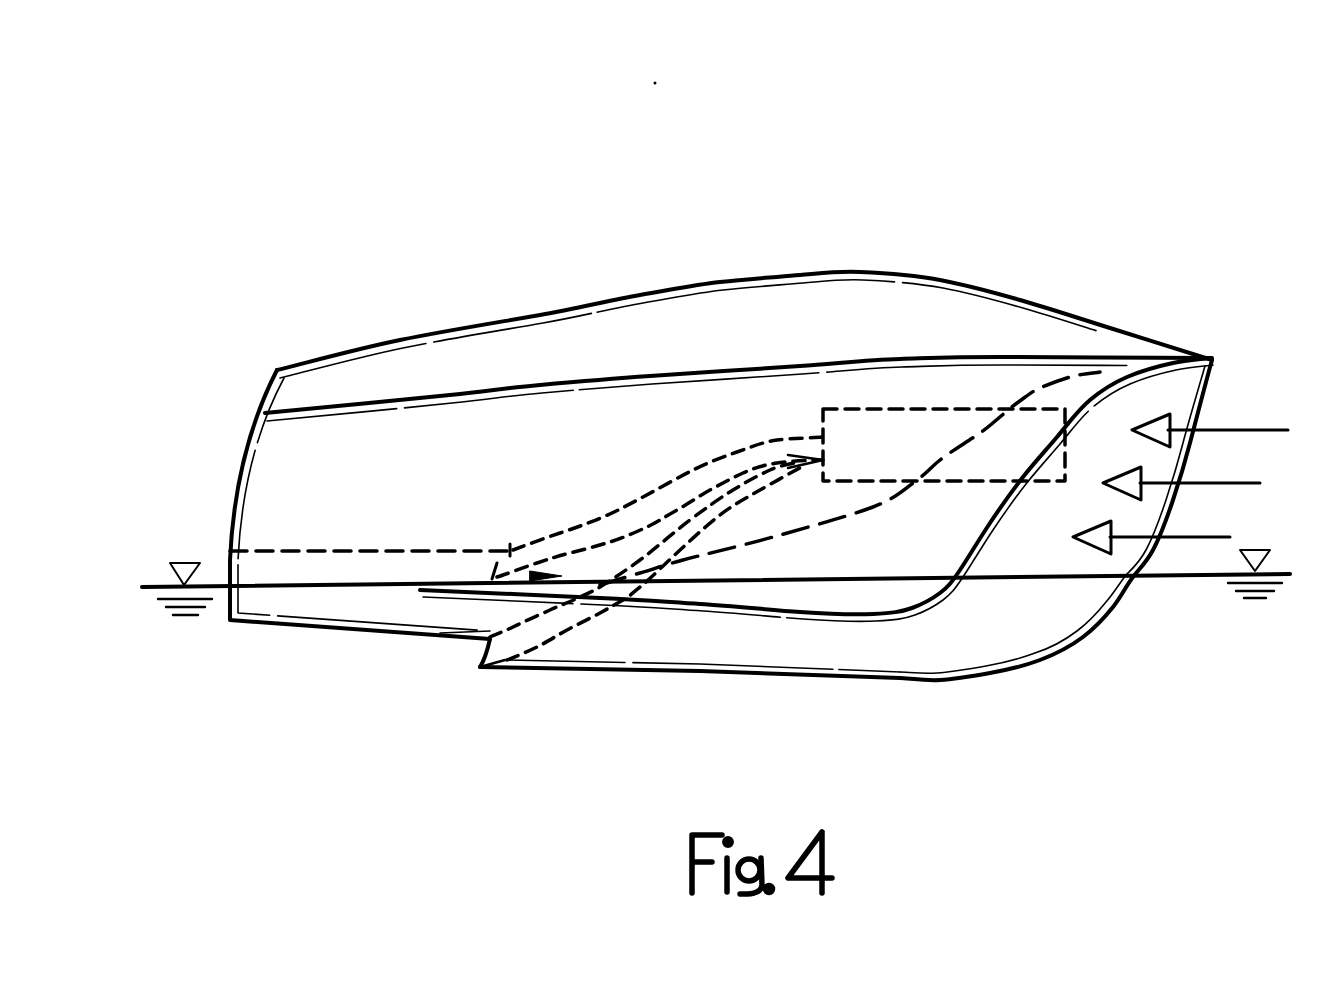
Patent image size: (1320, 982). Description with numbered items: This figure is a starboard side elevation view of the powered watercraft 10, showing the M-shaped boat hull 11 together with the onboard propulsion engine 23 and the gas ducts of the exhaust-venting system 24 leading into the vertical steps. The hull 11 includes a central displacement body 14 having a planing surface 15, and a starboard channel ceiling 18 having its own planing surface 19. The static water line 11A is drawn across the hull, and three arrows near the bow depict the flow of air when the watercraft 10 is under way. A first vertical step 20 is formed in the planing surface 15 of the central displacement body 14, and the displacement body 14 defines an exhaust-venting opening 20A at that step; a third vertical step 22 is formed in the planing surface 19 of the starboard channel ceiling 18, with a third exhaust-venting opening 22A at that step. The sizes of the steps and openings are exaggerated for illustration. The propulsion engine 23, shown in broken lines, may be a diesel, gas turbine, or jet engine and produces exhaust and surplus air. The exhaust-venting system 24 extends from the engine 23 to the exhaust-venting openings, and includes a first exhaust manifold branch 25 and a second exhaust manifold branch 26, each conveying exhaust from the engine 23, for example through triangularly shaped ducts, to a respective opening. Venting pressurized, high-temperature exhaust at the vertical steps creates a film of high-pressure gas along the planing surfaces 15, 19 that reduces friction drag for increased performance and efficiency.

The powered watercraft 10 is at (265, 146).
The M-shaped boat hull 11 is at (1213, 383).
The static water line 11A is at (148, 585).
The central displacement body 14 is at (958, 680).
The planing surface 15 is at (268, 622).
The starboard channel ceiling 18 is at (1082, 378).
The planing surface 19 is at (357, 550).
The first vertical step 20 is at (482, 664).
The exhaust-venting opening 20A is at (478, 648).
The third vertical step 22 is at (508, 550).
The third exhaust-venting opening 22A is at (497, 563).
The onboard propulsion engine 23 is at (957, 408).
The exhaust-venting system 24 is at (713, 442).
The first exhaust manifold branch 25 is at (557, 532).
The second exhaust manifold branch 26 is at (572, 632).